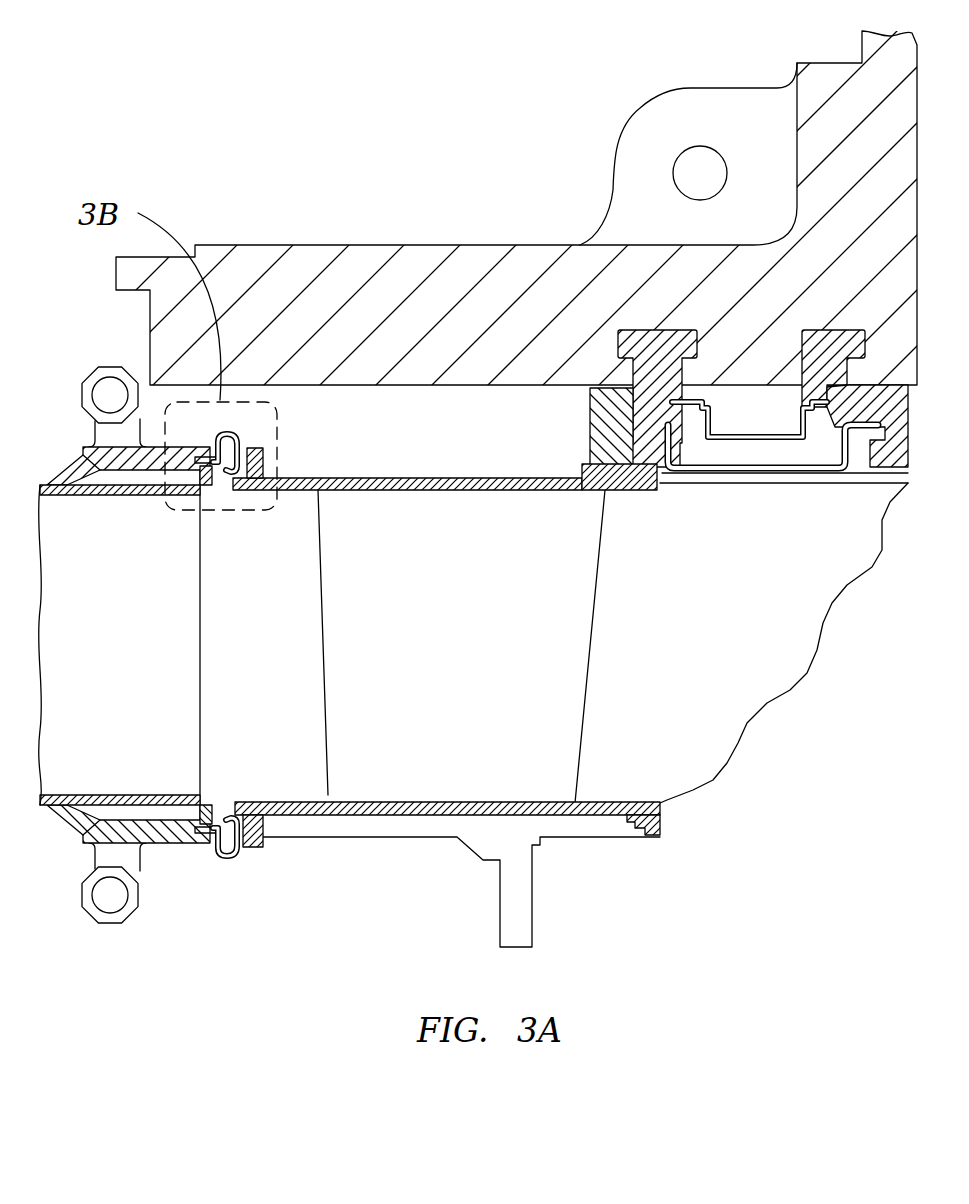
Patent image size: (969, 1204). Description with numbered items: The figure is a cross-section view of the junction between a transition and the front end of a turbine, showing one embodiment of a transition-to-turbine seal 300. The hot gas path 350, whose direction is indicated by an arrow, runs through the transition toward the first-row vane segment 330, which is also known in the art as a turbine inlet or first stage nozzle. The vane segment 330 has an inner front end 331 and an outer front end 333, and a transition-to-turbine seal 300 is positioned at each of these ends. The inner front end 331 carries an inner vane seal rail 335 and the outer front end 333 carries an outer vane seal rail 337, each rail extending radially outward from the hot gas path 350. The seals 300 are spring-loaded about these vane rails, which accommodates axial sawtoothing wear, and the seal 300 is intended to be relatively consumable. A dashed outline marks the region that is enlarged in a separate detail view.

The transition-to-turbine seal 300 is at (259, 436).
The row 1 vane segment 330 is at (467, 492).
The inner front end 331 is at (230, 785).
The outer front end 333 is at (229, 505).
The inner vane seal rail 335 is at (230, 852).
The outer vane seal rail 337 is at (222, 442).
The hot gas path 350 is at (150, 662).